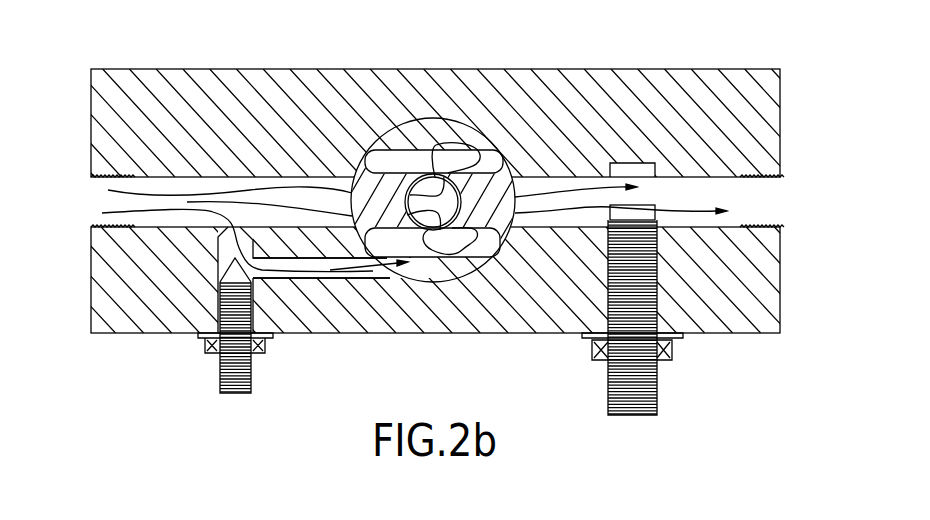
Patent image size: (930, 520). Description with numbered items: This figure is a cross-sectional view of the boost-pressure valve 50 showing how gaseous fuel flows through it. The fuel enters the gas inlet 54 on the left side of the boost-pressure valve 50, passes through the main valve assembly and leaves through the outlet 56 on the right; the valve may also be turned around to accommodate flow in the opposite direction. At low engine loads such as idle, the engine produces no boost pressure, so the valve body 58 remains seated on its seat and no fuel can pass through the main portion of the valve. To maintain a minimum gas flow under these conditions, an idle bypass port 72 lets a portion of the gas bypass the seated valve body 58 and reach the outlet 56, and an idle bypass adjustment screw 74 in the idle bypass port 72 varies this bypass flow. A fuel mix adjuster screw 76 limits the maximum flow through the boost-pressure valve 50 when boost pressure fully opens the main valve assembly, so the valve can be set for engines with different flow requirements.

The boost-pressure valve 50 is at (87, 338).
The gas inlet 54 is at (91, 197).
The outlet 56 is at (782, 202).
The valve body 58 is at (383, 178).
The idle bypass port 72 is at (355, 270).
The idle bypass adjustment screw 74 is at (217, 395).
The fuel mix adjuster screw 76 is at (657, 390).